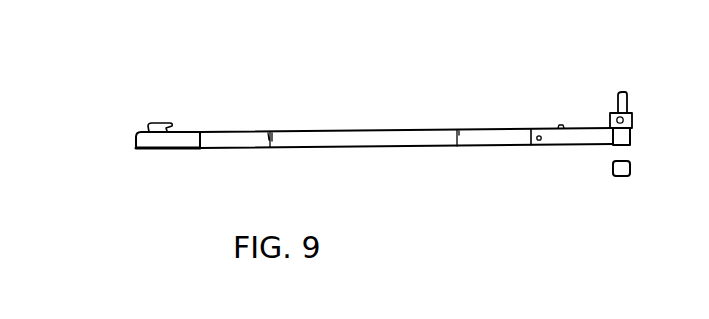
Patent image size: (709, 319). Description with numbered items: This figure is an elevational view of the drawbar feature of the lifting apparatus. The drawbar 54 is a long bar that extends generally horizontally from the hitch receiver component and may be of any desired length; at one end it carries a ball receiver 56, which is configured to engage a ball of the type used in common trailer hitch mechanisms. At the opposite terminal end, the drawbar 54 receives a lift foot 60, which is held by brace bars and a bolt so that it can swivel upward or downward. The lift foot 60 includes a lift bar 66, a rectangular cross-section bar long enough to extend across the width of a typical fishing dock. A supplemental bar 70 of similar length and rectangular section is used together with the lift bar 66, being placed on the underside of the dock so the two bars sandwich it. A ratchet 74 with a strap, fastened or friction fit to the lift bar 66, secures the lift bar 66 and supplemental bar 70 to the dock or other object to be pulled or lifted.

The drawbar 54 is at (386, 133).
The ball receiver 56 is at (174, 103).
The lift foot 60 is at (570, 108).
The lift bar 66 is at (632, 137).
The supplemental bar 70 is at (631, 168).
The ratchet 74 is at (652, 117).